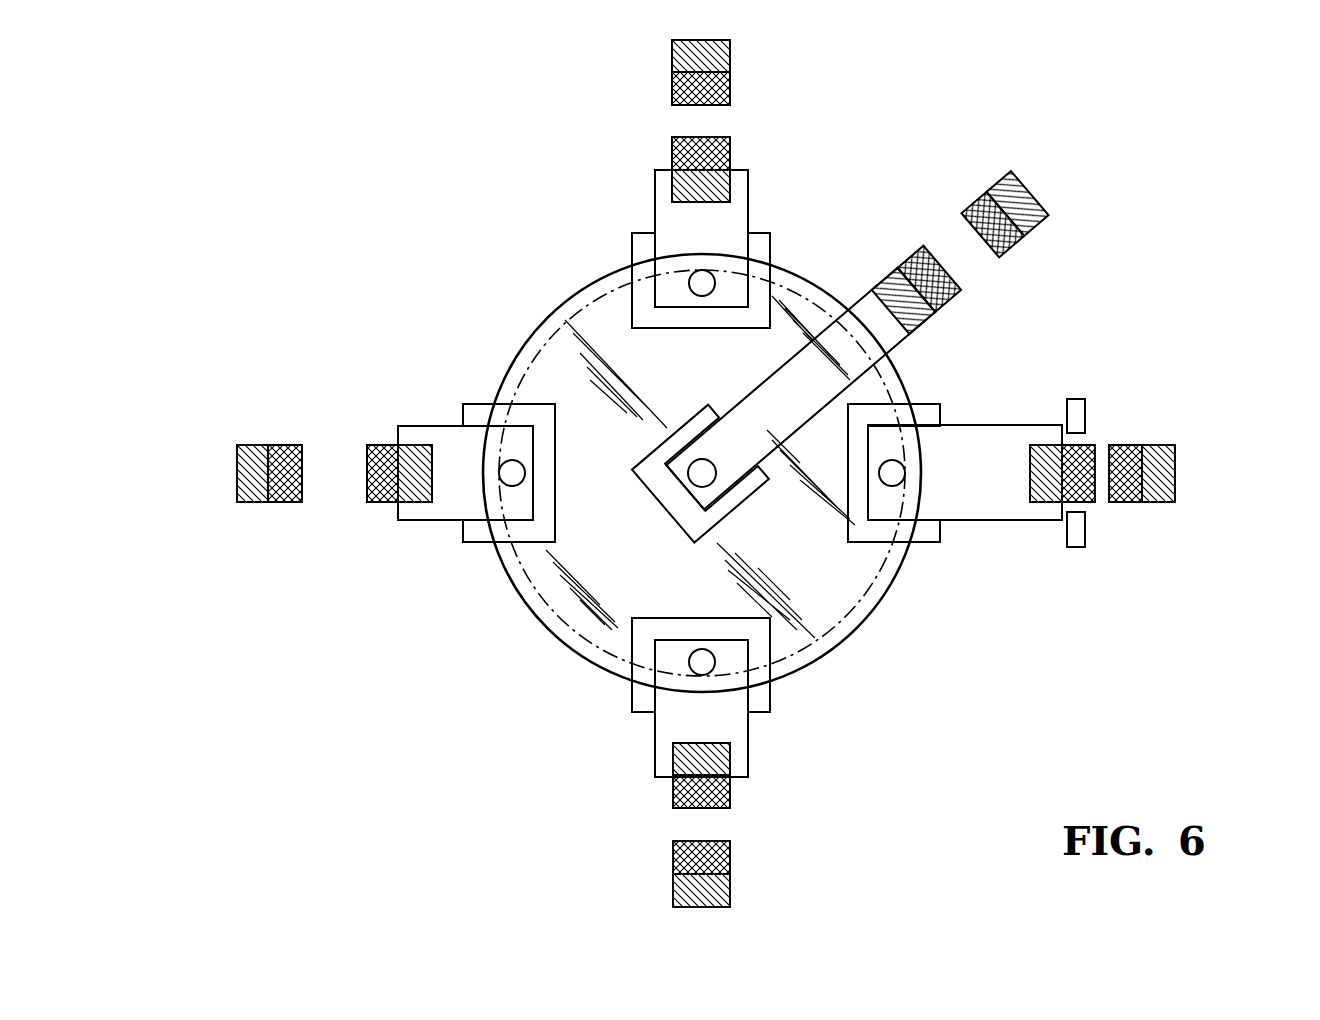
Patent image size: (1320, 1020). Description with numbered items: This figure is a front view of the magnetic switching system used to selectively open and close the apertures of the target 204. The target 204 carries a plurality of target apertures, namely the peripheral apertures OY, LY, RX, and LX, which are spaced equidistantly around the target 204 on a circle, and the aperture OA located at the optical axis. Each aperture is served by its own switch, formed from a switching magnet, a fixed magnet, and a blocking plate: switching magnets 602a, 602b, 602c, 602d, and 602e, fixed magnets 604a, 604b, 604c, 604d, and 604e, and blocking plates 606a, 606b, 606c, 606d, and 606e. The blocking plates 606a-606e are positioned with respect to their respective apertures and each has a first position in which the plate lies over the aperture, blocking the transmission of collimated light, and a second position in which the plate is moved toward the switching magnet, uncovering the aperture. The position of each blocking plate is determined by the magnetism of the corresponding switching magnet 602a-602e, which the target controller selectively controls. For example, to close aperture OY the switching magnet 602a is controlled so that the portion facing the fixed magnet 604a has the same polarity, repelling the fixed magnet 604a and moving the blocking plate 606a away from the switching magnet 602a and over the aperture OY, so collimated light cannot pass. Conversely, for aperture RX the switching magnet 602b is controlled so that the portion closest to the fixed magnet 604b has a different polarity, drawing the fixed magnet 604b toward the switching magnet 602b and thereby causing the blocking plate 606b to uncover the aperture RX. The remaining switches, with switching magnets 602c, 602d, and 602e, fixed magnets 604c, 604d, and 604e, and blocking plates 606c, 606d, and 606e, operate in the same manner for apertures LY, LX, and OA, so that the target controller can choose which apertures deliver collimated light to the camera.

The target 204 is at (563, 303).
The switching magnet 602a is at (723, 83).
The switching magnet 602b is at (1147, 490).
The switching magnet 602c is at (678, 866).
The switching magnet 602d is at (257, 488).
The switching magnet 602e is at (1027, 220).
The fixed magnet 604a is at (723, 163).
The fixed magnet 604b is at (1022, 495).
The fixed magnet 604c is at (678, 789).
The fixed magnet 604d is at (448, 515).
The fixed magnet 604e is at (957, 290).
The blocking plate 606a is at (735, 215).
The blocking plate 606b is at (953, 513).
The blocking plate 606c is at (667, 717).
The blocking plate 606d is at (375, 497).
The blocking plate 606e is at (900, 333).
The target aperture OY is at (707, 277).
The peripheral target aperture LY is at (713, 665).
The peripheral target aperture LX is at (508, 478).
The peripheral target aperture RX is at (893, 478).
The target aperture OA is at (698, 483).